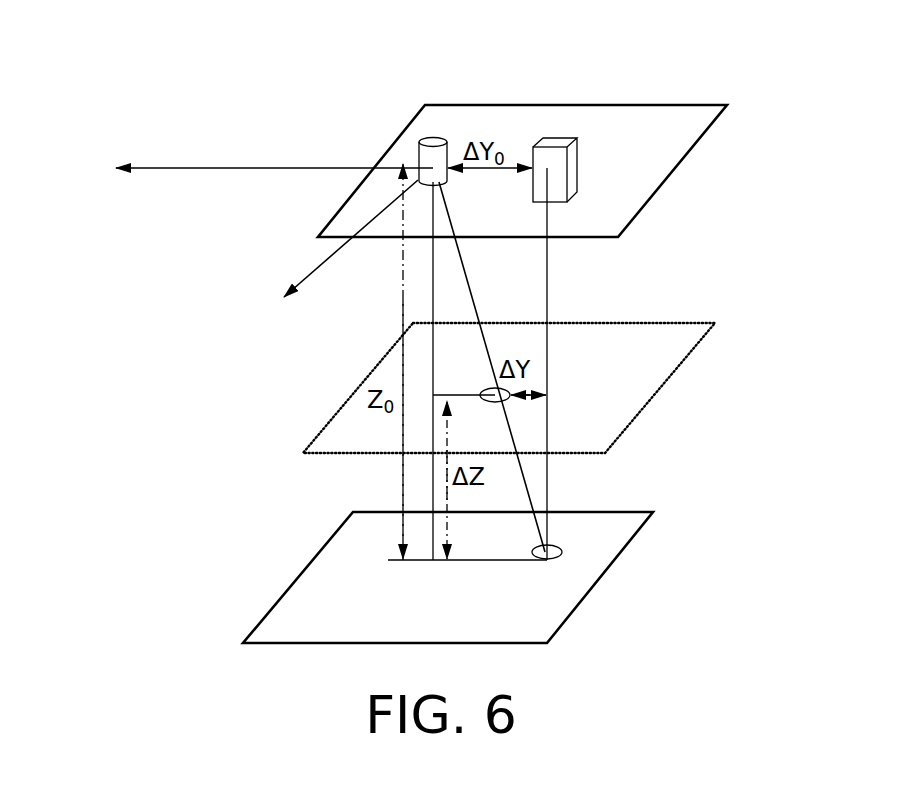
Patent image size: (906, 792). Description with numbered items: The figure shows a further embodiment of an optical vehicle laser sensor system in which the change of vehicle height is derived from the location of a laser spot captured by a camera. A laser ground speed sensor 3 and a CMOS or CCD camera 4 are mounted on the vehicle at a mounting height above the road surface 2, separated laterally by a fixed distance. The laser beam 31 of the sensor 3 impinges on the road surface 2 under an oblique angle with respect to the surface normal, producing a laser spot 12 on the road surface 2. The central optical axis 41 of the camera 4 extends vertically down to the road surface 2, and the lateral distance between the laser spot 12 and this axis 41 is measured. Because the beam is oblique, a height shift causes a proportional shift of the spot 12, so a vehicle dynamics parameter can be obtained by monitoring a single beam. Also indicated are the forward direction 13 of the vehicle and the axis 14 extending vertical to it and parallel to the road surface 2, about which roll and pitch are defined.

The road surface 2 is at (297, 606).
The laser device 3 is at (433, 137).
The camera 4 is at (560, 139).
The laser spot 12 is at (562, 552).
The forward direction 13 is at (271, 165).
The axis 14 is at (330, 250).
The laser beam 31 is at (530, 502).
The central optical axis 41 is at (547, 292).